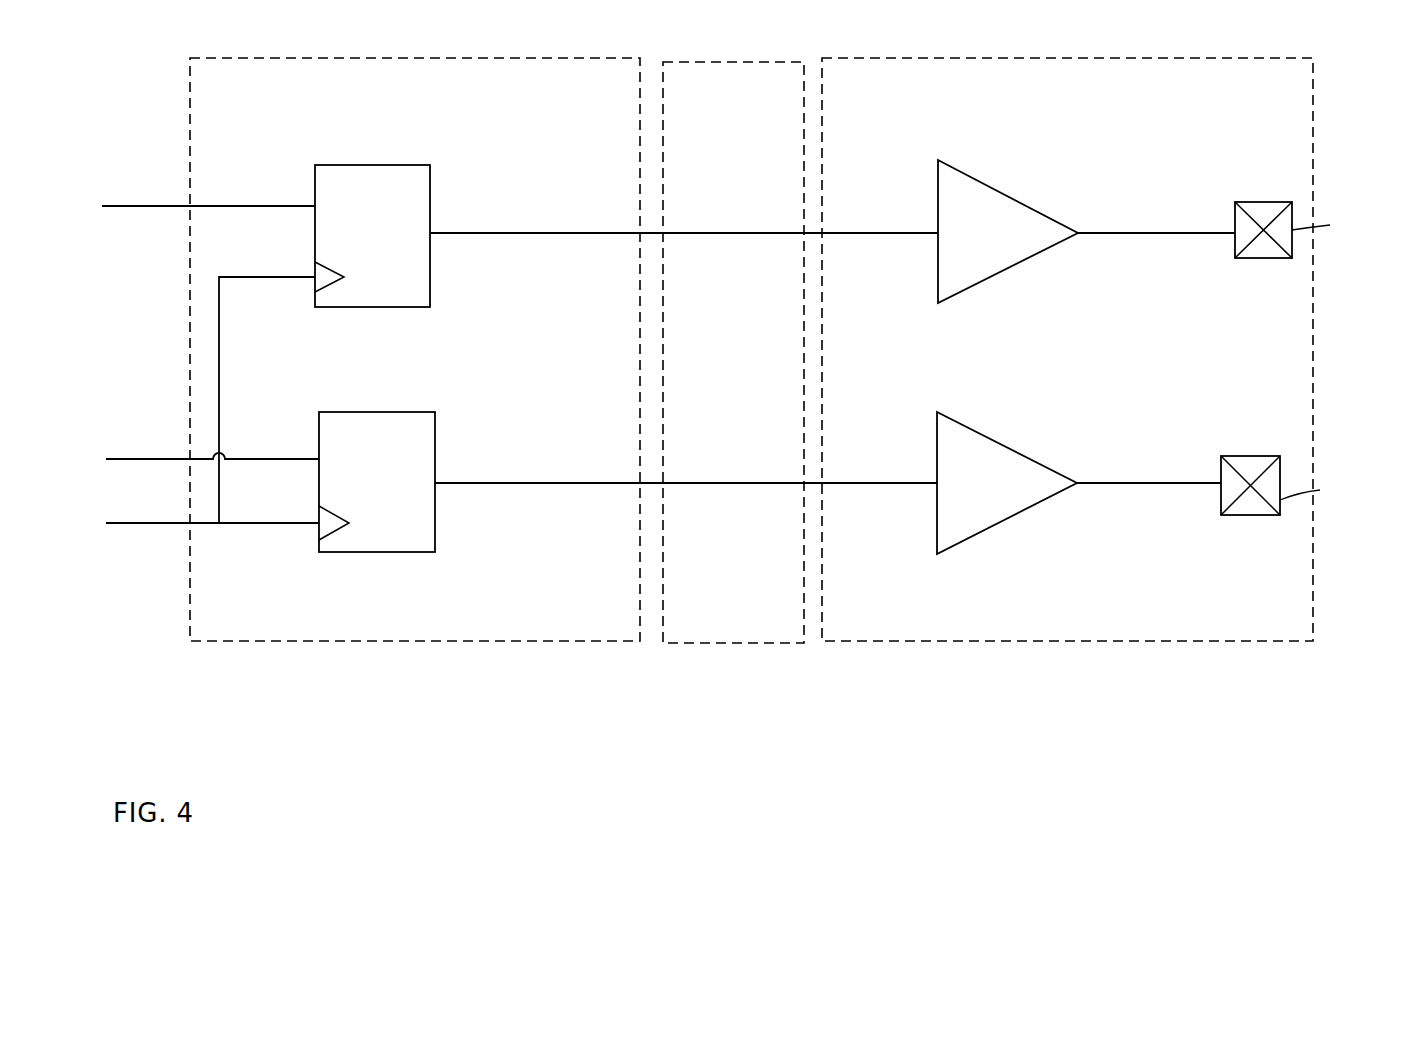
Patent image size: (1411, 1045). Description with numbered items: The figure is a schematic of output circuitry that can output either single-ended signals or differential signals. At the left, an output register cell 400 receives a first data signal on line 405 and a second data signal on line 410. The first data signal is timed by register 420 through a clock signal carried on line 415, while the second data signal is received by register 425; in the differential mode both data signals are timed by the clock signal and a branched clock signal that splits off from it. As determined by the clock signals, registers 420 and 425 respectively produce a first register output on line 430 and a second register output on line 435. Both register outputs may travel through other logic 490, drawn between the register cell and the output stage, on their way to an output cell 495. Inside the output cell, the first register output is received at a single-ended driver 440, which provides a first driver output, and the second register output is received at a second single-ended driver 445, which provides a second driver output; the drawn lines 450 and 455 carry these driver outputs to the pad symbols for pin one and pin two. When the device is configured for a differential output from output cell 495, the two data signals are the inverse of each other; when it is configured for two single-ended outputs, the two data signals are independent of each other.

The output register cell 400 is at (415, 349).
The line 405 is at (135, 457).
The line 410 is at (132, 205).
The line 415 is at (106, 524).
The register 420 is at (377, 482).
The register 425 is at (372, 236).
The line 430 is at (535, 482).
The line 435 is at (530, 232).
The single-ended driver 440 is at (937, 523).
The single-ended driver 445 is at (938, 178).
The output line D1o to pin 1 450 is at (1162, 483).
The output line D2o to pin 2 455 is at (1163, 233).
The other logic 490 is at (733, 352).
The output cell 495 is at (1067, 349).